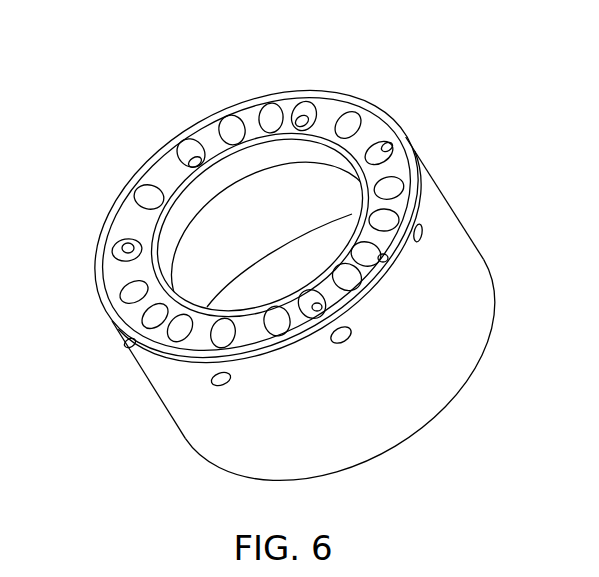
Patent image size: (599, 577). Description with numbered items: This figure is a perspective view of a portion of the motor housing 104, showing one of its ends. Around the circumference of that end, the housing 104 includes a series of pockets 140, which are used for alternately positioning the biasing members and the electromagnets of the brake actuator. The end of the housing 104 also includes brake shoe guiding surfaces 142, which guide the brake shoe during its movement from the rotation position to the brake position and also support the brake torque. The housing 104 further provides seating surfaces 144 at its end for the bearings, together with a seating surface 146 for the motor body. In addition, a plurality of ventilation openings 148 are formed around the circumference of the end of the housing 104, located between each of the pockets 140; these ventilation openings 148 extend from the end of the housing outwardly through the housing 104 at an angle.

The housing 104 is at (452, 208).
The pockets 140 is at (153, 187).
The brake shoe guiding surfaces 142 is at (203, 142).
The seating surfaces 144 is at (226, 178).
The seating surface 146 is at (222, 258).
The ventilation openings 148 is at (200, 160).